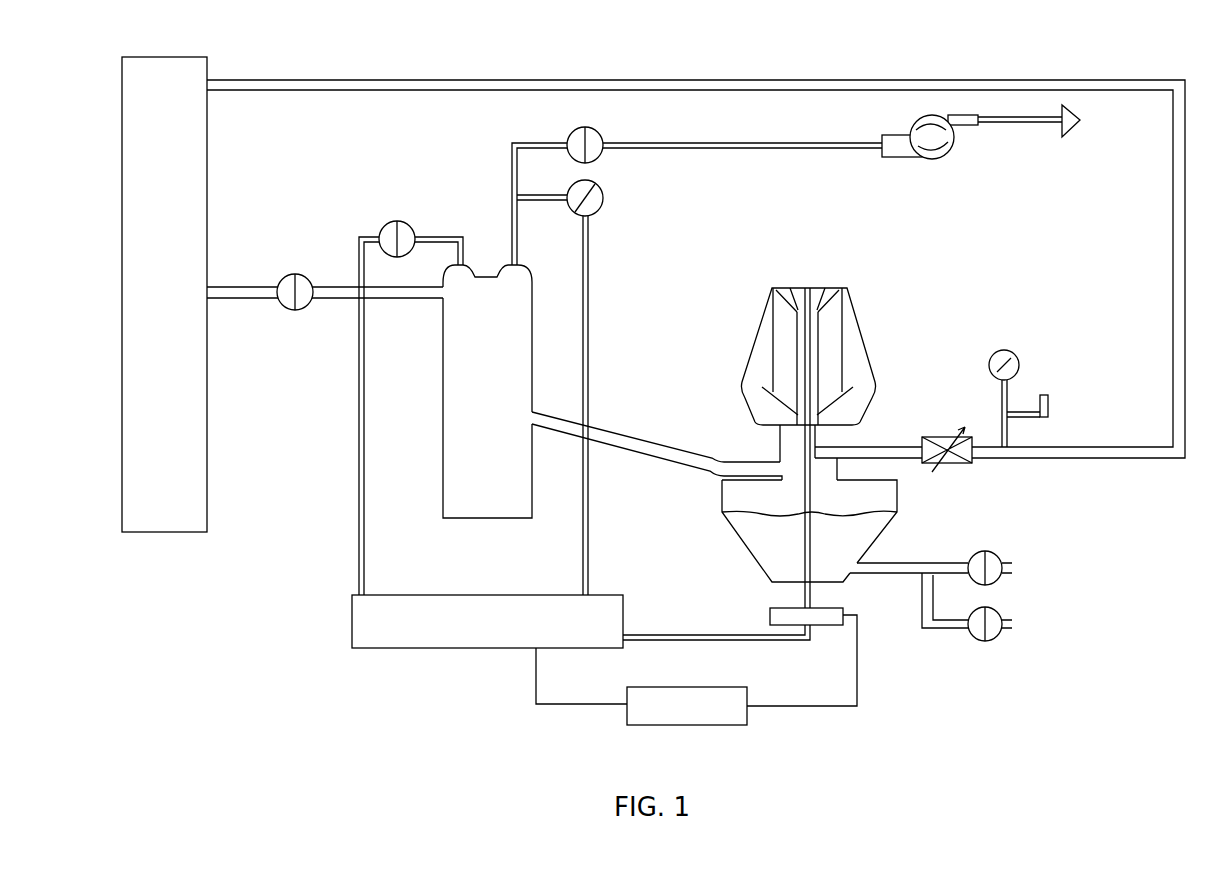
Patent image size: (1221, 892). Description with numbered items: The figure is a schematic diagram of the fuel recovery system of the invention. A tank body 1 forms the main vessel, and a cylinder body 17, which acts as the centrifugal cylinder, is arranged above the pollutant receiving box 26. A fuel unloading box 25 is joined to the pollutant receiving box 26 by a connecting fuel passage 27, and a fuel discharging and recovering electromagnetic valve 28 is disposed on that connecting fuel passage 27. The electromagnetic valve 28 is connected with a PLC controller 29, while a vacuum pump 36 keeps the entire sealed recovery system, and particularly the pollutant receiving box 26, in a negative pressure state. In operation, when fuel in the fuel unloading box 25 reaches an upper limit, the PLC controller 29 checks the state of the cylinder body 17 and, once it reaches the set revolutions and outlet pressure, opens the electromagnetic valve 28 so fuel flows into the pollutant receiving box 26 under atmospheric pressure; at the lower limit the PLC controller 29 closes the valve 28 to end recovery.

The tank body 1 is at (487, 391).
The cylinder body 17 is at (870, 352).
The fuel unloading box 25 is at (487, 621).
The pollutant receiving box 26 is at (809, 531).
The connecting fuel passage 27 is at (658, 638).
The fuel discharging and recovering electromagnetic valve 28 is at (817, 613).
The PLC controller 29 is at (680, 708).
The vacuum pump 36 is at (981, 147).